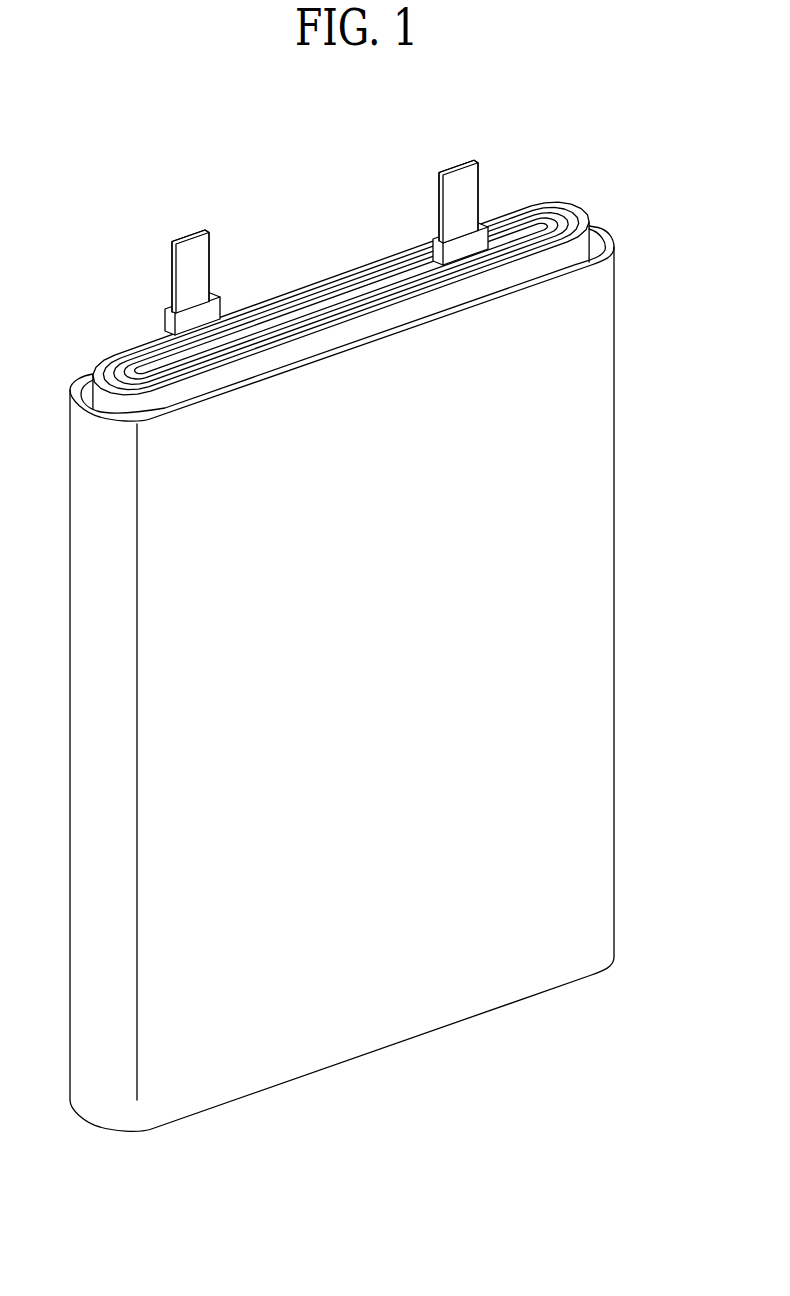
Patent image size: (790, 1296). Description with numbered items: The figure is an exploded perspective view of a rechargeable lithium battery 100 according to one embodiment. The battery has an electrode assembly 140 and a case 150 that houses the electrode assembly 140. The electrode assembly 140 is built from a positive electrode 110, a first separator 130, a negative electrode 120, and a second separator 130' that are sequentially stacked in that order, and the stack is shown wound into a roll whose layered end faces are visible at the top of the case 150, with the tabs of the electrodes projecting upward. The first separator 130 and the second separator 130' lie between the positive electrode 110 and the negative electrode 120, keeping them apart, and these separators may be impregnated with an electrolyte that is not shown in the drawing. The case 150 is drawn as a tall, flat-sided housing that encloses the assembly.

The rechargeable lithium battery 100 is at (180, 163).
The positive electrode 110 is at (586, 220).
The negative electrode 120 is at (550, 222).
The first separator 130 is at (343, 258).
The second separator 130' is at (341, 248).
The electrode assembly 140 is at (382, 233).
The case 150 is at (567, 628).